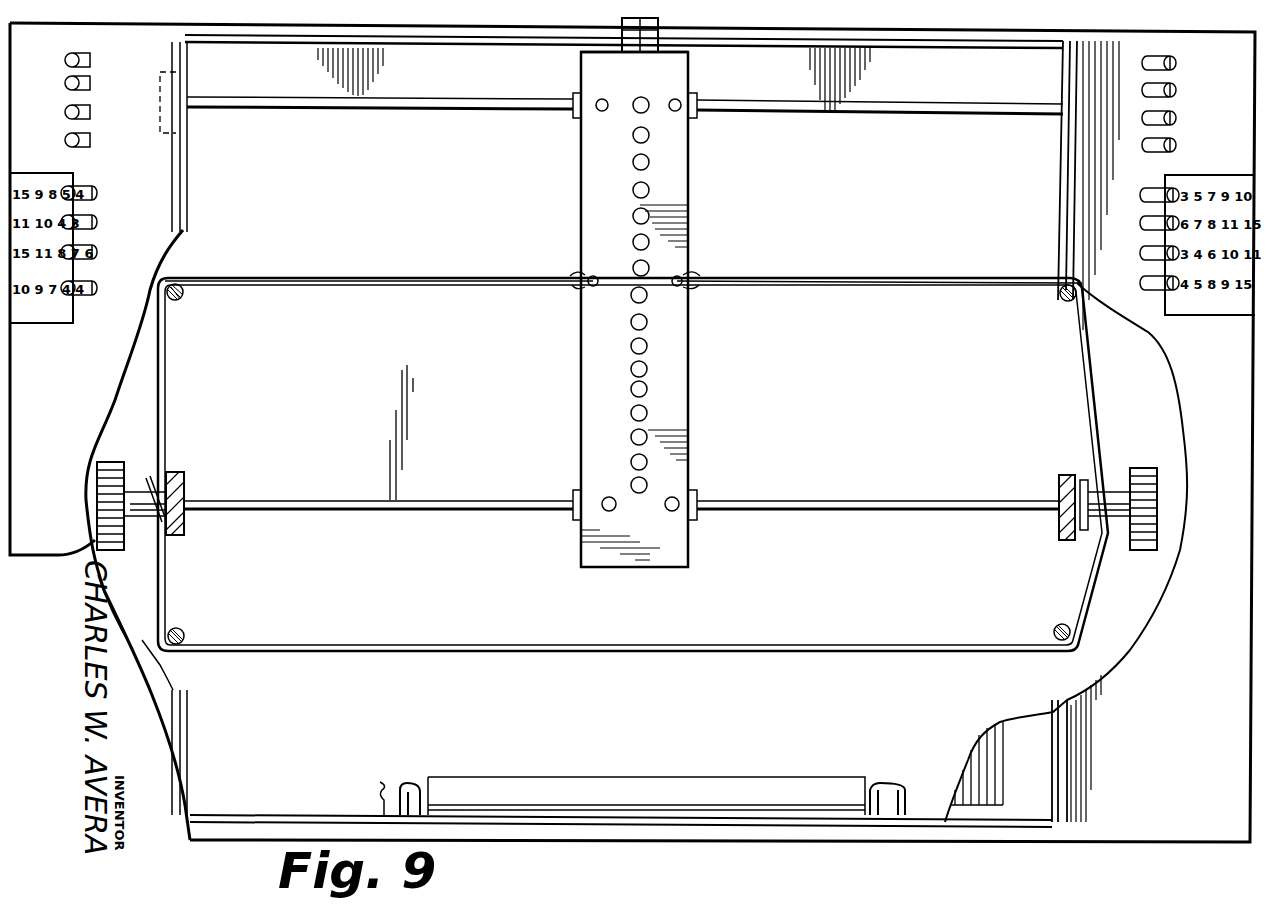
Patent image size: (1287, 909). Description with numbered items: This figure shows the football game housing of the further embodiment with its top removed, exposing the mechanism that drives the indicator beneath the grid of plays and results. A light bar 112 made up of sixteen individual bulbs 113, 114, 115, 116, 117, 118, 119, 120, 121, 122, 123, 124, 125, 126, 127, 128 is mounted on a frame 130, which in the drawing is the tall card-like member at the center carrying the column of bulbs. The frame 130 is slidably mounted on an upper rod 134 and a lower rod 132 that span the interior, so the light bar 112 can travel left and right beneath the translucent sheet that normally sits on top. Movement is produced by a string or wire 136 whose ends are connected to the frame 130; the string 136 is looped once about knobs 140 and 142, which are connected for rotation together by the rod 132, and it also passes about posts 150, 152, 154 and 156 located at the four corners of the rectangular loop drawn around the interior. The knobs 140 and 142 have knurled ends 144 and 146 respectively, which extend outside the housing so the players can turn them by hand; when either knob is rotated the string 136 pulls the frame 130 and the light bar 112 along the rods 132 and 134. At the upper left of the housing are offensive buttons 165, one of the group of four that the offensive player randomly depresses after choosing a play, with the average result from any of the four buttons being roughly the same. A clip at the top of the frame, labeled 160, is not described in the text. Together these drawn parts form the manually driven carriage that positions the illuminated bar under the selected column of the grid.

The light bar 112 is at (572, 193).
The bulb 113 is at (641, 97).
The bulb 114 is at (633, 135).
The bulb 115 is at (633, 162).
The bulb 116 is at (633, 190).
The bulb 117 is at (633, 216).
The bulb 118 is at (633, 242).
The bulb 119 is at (633, 268).
The bulb 120 is at (631, 295).
The bulb 121 is at (631, 322).
The bulb 122 is at (631, 346).
The bulb 123 is at (631, 369).
The bulb 124 is at (631, 389).
The bulb 125 is at (631, 413).
The bulb 126 is at (631, 437).
The bulb 127 is at (631, 462).
The bulb 128 is at (631, 485).
The frame 130 is at (688, 370).
The rod 132 is at (783, 512).
The rod 134 is at (800, 117).
The string 136 is at (793, 284).
The knob 140 is at (1080, 486).
The knob 142 is at (178, 470).
The knurled end 144 is at (1158, 468).
The knurled end 146 is at (108, 462).
The post 150 is at (182, 297).
The post 152 is at (184, 634).
The post 154 is at (1054, 632).
The post 156 is at (1062, 300).
The clip 160 is at (660, 25).
The offensive button 165 is at (92, 60).